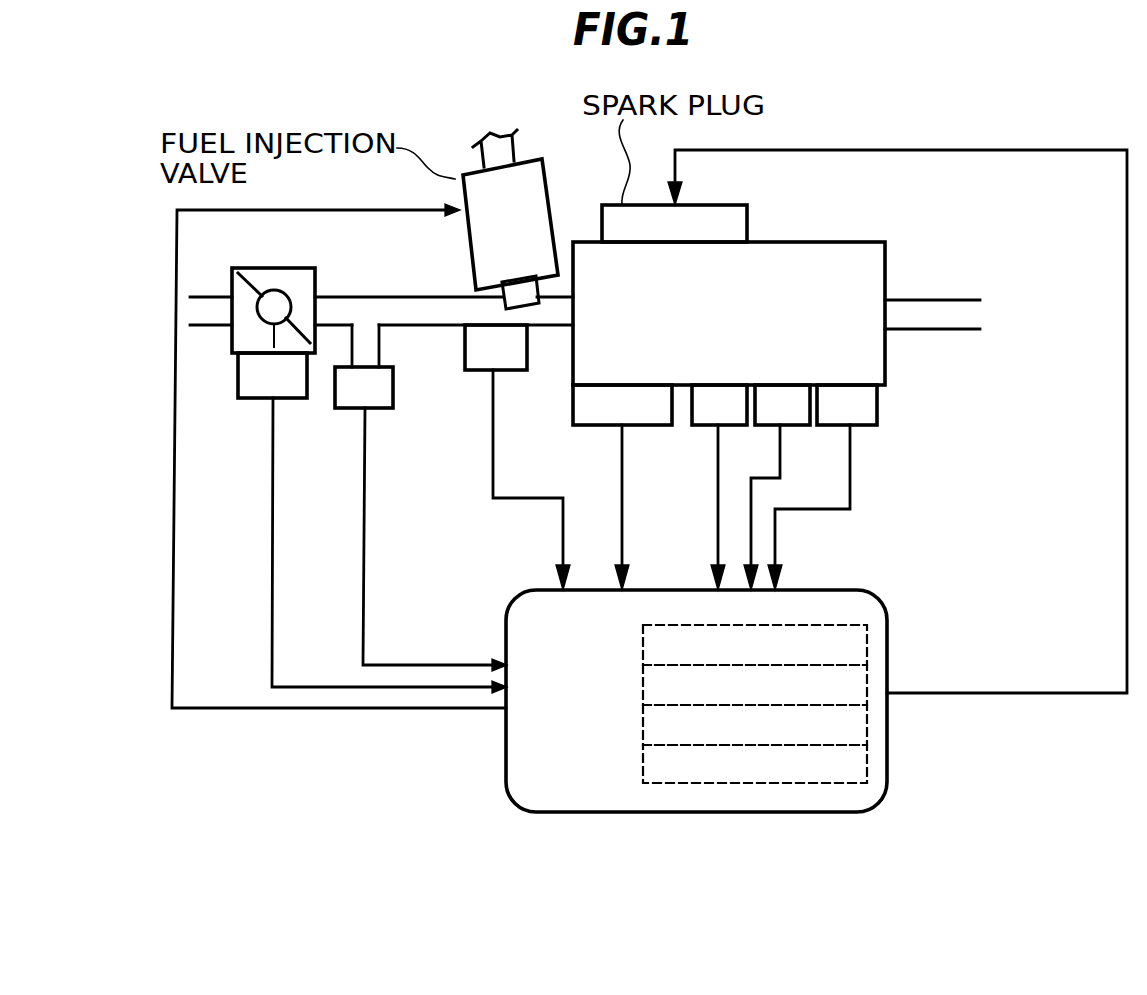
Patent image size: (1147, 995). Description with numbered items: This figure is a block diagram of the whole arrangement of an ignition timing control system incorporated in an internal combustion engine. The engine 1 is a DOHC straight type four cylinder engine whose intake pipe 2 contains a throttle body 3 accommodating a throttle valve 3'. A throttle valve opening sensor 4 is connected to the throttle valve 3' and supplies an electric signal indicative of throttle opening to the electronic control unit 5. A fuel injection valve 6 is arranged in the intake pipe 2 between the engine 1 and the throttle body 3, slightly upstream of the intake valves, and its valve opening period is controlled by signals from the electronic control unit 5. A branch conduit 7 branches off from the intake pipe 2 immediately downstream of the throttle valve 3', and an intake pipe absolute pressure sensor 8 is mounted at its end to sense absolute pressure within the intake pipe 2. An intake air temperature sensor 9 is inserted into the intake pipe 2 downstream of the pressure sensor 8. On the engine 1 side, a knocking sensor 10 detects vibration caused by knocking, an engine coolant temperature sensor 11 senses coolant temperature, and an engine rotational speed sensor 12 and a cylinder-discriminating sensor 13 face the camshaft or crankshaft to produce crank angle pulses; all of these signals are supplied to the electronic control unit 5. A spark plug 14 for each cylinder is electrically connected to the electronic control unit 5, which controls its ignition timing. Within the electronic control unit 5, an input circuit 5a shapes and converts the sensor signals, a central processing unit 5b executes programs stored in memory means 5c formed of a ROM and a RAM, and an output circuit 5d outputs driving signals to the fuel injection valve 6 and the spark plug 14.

The engine 1 is at (823, 242).
The intake pipe 2 is at (402, 295).
The throttle body 3 is at (291, 286).
The throttle valve 3' is at (274, 283).
The throttle valve opening sensor 4 is at (307, 383).
The electronic control unit 5 is at (674, 701).
The input circuit 5a is at (867, 650).
The central processing unit 5b is at (867, 680).
The memory means 5c is at (867, 733).
The output circuit 5d is at (867, 763).
The fuel injection valve 6 is at (550, 193).
The branch conduit 7 is at (381, 350).
The intake pipe absolute pressure sensor 8 is at (383, 408).
The intake air temperature sensor 9 is at (507, 370).
The knocking sensor 10 is at (605, 424).
The engine coolant temperature sensor 11 is at (725, 424).
The engine rotational speed sensor 12 is at (785, 424).
The cylinder-discriminating sensor 13 is at (865, 424).
The spark plug 14 is at (747, 217).